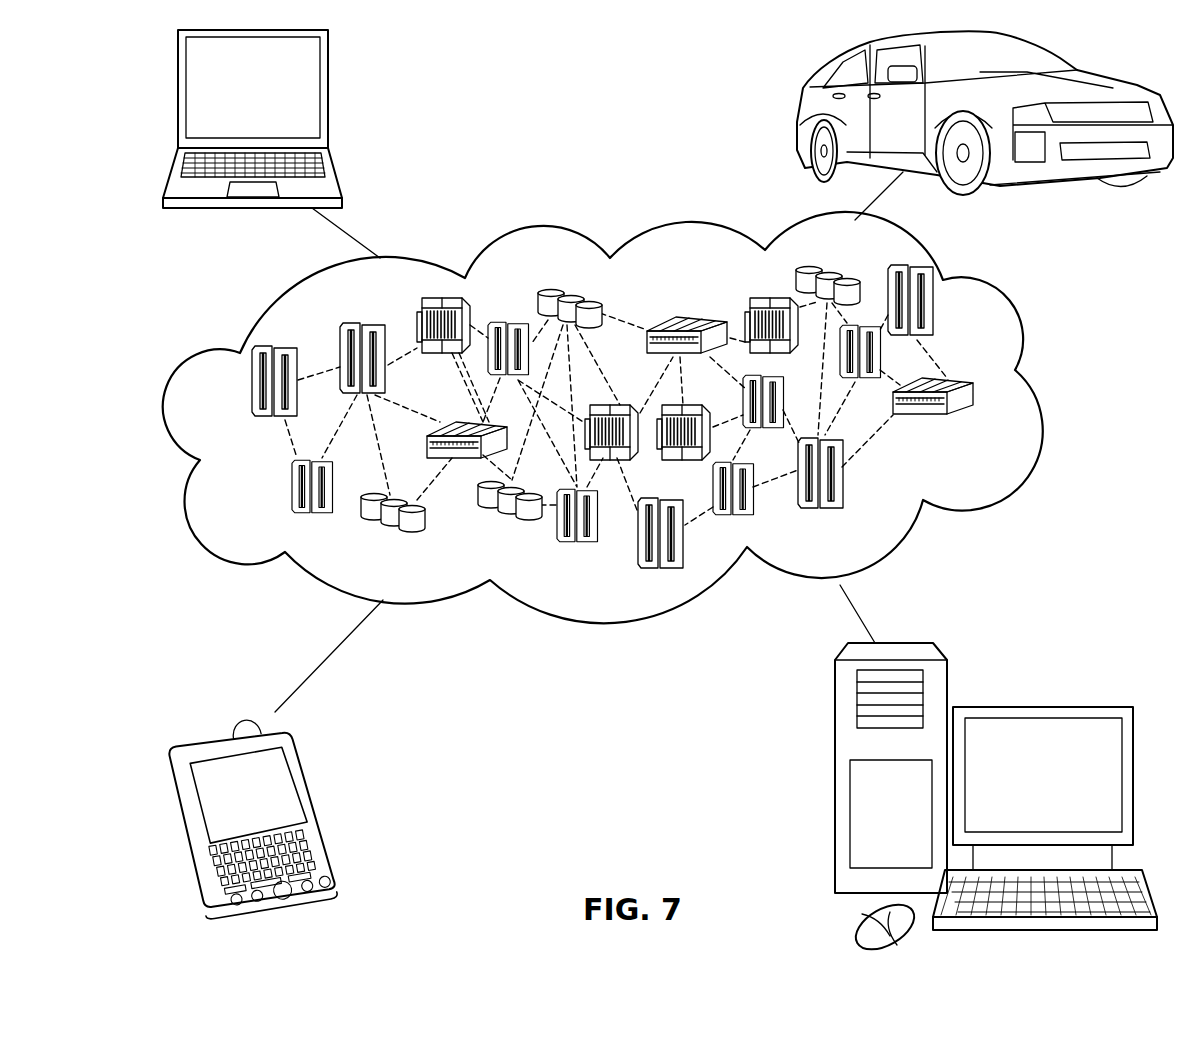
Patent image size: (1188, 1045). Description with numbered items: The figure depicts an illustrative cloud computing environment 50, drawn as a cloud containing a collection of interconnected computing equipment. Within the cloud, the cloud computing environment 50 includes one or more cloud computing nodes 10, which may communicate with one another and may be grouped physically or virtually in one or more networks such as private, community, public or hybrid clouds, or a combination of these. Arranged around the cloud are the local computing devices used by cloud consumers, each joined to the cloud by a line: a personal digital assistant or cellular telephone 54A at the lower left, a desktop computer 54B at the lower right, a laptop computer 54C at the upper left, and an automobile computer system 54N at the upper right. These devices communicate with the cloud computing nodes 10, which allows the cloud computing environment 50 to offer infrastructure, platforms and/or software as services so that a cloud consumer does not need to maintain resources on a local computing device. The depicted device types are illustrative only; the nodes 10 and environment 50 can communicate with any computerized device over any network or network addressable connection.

The cloud computing node 10 is at (977, 425).
The cloud computing environment 50 is at (1040, 393).
The personal digital assistant or cellular telephone 54A is at (317, 809).
The desktop computer 54B is at (1038, 706).
The laptop computer 54C is at (329, 98).
The automobile computer system 54N is at (800, 117).